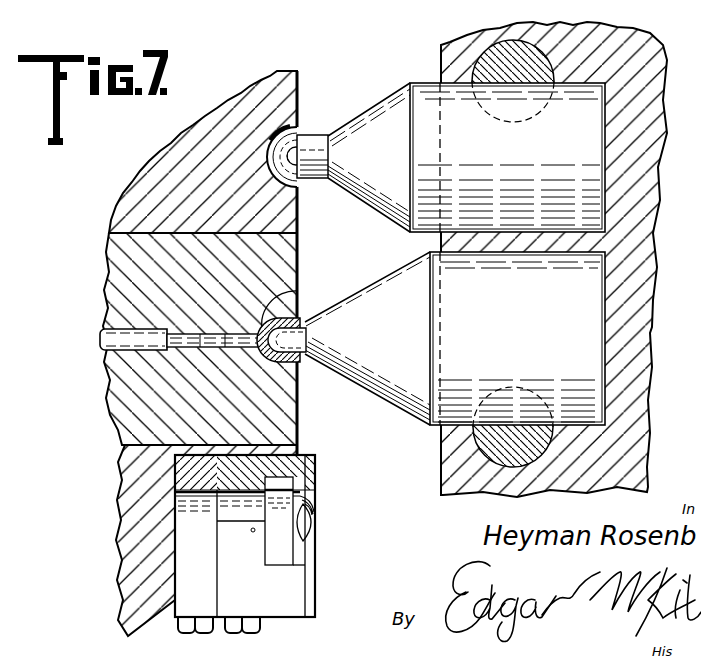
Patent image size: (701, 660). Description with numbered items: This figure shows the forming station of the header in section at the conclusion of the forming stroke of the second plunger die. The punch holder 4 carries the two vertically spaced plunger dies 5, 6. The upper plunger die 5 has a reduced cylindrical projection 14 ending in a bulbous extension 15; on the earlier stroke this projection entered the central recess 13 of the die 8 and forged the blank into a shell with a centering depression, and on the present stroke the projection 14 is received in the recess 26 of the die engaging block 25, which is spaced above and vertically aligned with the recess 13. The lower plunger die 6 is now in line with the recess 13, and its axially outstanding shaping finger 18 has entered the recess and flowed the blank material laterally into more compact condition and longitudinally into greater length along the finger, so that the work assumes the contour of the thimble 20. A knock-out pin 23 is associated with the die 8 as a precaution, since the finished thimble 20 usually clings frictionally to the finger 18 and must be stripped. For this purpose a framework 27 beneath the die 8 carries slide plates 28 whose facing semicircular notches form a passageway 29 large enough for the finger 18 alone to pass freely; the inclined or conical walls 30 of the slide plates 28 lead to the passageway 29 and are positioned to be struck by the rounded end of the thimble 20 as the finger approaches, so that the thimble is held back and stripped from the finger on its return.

The punch holder 4 is at (455, 57).
The plunger die 5 is at (386, 108).
The plunger die 6 is at (387, 377).
The die 8 is at (262, 263).
The recess 13 is at (292, 292).
The projection 14 is at (318, 168).
The bulbous extension 15 is at (321, 137).
The shaping finger 18 is at (309, 333).
The thimble 20 is at (330, 318).
The knock-out pin 23 is at (294, 392).
The die engaging block 25 is at (278, 92).
The recess 26 is at (292, 128).
The framework 27 is at (305, 585).
The slide plates 28 is at (303, 548).
The passageway 29 is at (308, 522).
The conical walls 30 is at (318, 508).